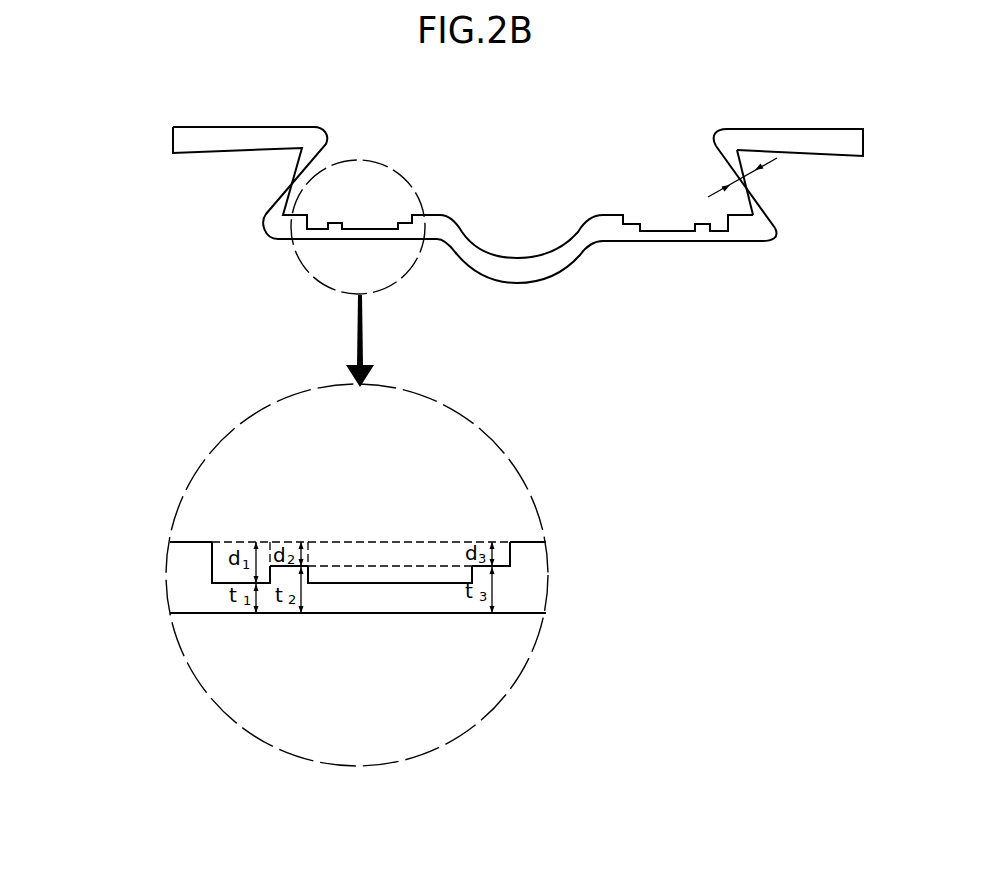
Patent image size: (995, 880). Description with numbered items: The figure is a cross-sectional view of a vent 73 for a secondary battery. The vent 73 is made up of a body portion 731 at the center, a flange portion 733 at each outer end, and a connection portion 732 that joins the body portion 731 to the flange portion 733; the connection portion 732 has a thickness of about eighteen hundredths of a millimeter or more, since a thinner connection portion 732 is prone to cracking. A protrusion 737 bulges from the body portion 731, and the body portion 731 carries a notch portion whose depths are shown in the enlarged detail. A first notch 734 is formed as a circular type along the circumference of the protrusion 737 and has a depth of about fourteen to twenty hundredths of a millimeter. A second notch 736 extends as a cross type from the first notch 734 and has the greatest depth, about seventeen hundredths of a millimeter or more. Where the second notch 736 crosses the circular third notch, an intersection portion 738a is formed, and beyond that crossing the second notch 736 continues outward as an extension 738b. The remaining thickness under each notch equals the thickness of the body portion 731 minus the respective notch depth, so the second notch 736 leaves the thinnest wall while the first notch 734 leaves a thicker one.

The vent 73 is at (628, 142).
The body portion 731 is at (694, 254).
The connection portion 732 is at (752, 193).
The flange portion 733 is at (788, 120).
The first notch 734 is at (503, 546).
The second notch 736 is at (394, 561).
The protrusion 737 is at (522, 273).
The intersection portion 738a is at (290, 546).
The extension 738b is at (223, 552).